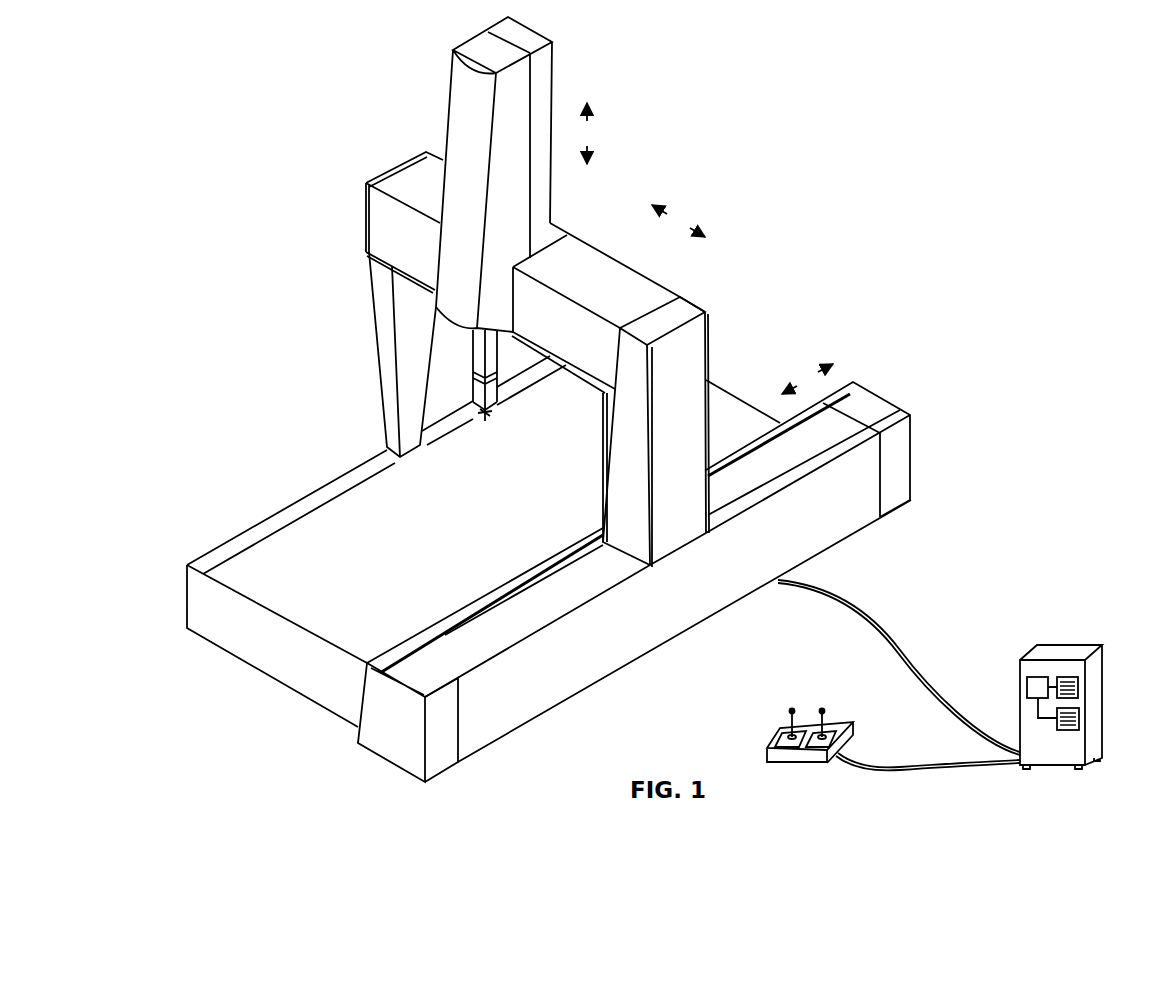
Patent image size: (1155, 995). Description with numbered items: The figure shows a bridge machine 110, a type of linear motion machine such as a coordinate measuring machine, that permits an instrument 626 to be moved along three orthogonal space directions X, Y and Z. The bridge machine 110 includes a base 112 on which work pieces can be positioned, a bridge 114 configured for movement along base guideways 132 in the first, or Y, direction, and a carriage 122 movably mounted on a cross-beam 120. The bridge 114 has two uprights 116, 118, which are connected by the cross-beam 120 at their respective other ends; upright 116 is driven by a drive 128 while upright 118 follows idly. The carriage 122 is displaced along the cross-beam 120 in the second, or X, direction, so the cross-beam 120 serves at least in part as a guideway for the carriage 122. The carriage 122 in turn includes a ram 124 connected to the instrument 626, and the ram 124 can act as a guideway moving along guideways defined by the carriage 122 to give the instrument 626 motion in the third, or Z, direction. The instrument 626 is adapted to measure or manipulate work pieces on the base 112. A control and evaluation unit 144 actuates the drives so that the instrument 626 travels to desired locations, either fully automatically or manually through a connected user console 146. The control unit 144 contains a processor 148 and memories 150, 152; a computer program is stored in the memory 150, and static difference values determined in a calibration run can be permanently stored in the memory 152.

The bridge machine 110 is at (243, 66).
The base 112 is at (273, 550).
The bridge 114 is at (706, 288).
The upright 116 is at (697, 362).
The upright 118 is at (383, 336).
The cross-beam 120 is at (622, 279).
The carriage 122 is at (458, 244).
The ram 124 is at (473, 353).
The instrument 626 is at (467, 409).
The drive 128 is at (673, 517).
The base guideways 132 is at (221, 550).
The control and evaluation unit 144 is at (1068, 648).
The user console 146 is at (843, 706).
The processor 148 is at (1027, 677).
The memory 150 is at (1078, 697).
The memory 152 is at (1077, 730).